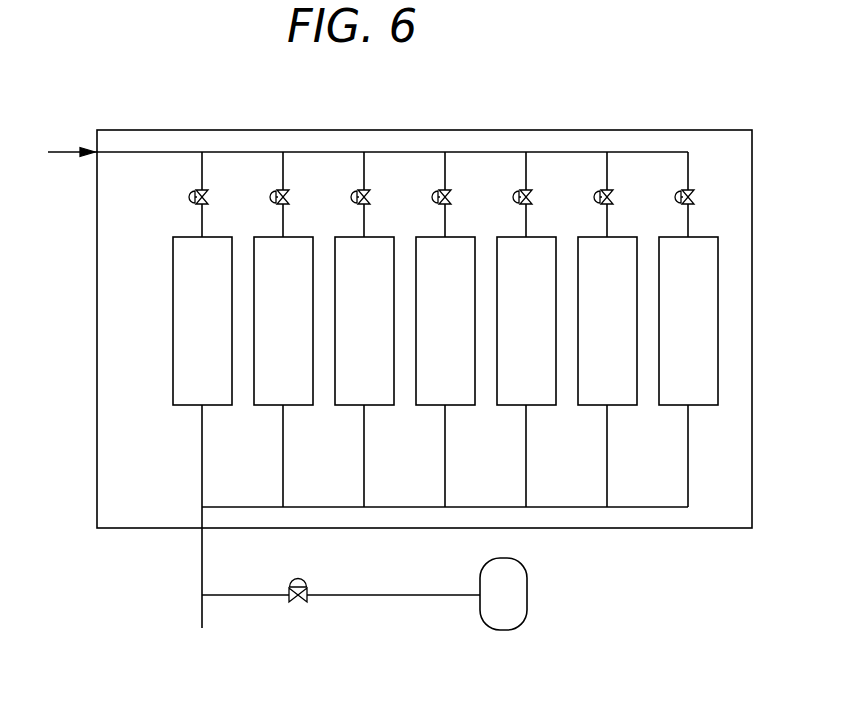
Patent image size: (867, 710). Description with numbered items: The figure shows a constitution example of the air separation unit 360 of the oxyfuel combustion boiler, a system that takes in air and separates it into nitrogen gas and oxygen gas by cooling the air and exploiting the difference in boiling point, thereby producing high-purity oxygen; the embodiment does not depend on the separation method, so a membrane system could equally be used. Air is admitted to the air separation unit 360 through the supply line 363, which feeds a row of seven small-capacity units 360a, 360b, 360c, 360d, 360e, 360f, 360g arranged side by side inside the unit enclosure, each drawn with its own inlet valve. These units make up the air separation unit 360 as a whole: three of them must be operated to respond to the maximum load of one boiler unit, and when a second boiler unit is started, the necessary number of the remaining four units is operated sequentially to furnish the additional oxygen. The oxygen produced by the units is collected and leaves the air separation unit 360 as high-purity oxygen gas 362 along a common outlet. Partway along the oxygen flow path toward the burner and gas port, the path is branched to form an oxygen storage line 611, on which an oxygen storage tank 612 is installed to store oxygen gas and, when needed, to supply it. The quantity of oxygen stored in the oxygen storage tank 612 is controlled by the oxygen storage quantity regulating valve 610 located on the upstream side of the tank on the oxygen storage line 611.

The air separation unit 360 is at (150, 130).
The unit 360a is at (185, 407).
The unit 360b is at (266, 407).
The unit 360c is at (347, 407).
The unit 360d is at (428, 407).
The unit 360e is at (509, 407).
The unit 360f is at (590, 407).
The unit 360g is at (671, 407).
The oxygen gas 362 is at (200, 613).
The air supply pipe 363 is at (63, 157).
The oxygen storage quantity regulating valve 610 is at (304, 578).
The oxygen storage line 611 is at (392, 593).
The oxygen storage tank 612 is at (527, 590).